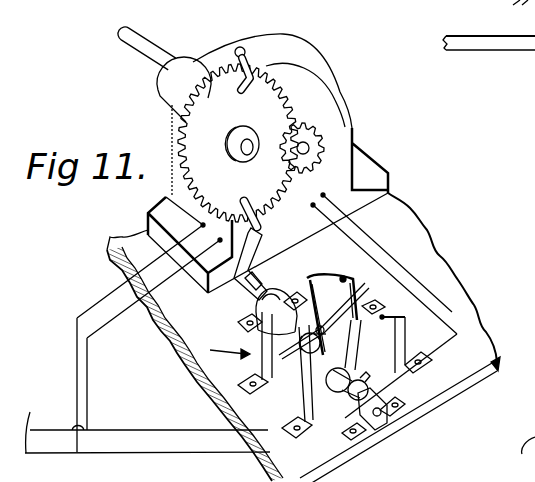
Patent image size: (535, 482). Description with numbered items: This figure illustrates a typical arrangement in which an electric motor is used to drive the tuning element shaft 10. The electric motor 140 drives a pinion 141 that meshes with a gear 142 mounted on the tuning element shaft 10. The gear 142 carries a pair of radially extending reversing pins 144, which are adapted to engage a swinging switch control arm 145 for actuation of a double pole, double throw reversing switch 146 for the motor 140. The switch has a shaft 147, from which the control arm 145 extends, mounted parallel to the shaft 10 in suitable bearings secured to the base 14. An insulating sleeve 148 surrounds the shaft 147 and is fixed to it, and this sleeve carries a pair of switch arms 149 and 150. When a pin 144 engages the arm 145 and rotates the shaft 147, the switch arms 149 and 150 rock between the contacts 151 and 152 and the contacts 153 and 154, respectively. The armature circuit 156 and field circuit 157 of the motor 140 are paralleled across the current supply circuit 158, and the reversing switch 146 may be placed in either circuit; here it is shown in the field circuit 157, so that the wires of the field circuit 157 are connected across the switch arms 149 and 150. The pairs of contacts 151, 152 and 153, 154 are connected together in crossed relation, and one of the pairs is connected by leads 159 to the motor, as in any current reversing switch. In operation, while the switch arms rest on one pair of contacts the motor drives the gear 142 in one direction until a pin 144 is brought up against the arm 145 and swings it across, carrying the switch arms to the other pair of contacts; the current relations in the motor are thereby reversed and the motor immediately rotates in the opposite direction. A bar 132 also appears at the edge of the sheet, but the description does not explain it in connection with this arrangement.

The tuning element shaft 10 is at (150, 43).
The base 14 is at (425, 255).
The bar 132 is at (503, 0).
The electric motor 140 is at (312, 96).
The pinion 141 is at (340, 133).
The gear 142 is at (238, 143).
The reversing pins 144 is at (244, 50).
The switch control arm 145 is at (262, 246).
The reversing switch 146 is at (223, 347).
The shaft 147 is at (275, 273).
The insulating sleeve 148 is at (321, 345).
The switch arm 149 is at (334, 320).
The switch arm 150 is at (360, 360).
The contact 151 is at (342, 277).
The contact 152 is at (398, 322).
The contact 153 is at (256, 302).
The contact 154 is at (262, 388).
The armature circuit 156 is at (78, 352).
The field circuit 157 is at (144, 450).
The current supply circuit 158 is at (41, 428).
The leads 159 is at (378, 243).